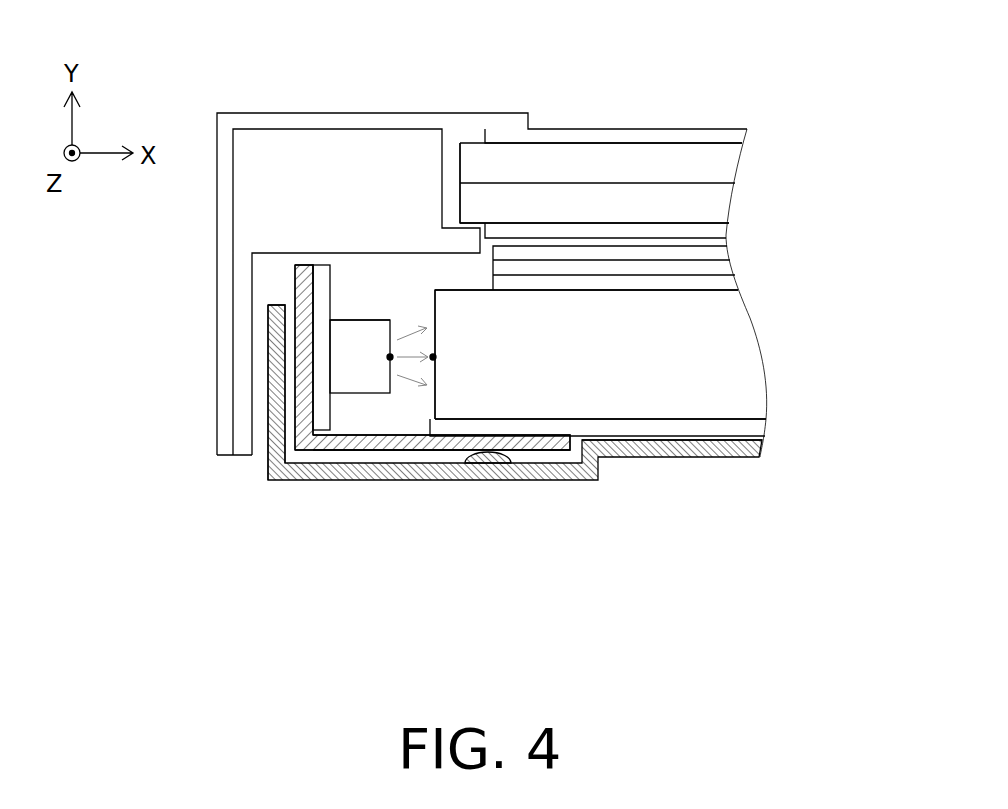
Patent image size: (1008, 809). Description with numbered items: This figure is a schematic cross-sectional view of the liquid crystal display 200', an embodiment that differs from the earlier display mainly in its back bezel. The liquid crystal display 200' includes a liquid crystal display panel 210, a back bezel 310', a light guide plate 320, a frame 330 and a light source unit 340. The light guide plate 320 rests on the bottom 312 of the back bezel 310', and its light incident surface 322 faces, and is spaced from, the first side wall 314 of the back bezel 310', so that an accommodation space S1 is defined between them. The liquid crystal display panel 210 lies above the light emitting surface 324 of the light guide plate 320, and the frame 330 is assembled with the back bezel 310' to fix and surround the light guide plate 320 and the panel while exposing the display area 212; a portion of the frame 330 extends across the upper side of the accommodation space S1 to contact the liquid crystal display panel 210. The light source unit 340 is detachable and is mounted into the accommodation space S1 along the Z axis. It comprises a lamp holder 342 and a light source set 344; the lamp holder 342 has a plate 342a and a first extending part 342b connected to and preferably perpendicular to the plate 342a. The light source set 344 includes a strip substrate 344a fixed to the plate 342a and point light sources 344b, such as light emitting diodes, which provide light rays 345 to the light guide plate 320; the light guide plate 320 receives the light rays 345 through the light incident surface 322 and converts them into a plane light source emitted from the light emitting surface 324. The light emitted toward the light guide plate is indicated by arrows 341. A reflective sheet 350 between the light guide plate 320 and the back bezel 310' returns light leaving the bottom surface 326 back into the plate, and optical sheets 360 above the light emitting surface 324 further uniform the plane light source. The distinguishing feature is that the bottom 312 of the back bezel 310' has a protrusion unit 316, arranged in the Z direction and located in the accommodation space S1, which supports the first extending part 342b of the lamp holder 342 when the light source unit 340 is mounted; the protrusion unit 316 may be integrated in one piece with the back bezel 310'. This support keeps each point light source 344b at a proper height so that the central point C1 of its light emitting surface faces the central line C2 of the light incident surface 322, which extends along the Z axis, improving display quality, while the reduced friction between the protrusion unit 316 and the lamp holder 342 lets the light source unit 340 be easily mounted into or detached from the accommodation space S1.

The liquid crystal display 200' is at (768, 547).
The liquid crystal display panel 210 is at (766, 188).
The display area 212 is at (643, 121).
The back bezel 310' is at (562, 395).
The bottom 312 is at (741, 435).
The first side wall 314 is at (296, 326).
The protrusion unit 316 is at (495, 458).
The light guide plate 320 is at (627, 407).
The light incident surface 322 is at (432, 294).
The light emitting surface 324 is at (733, 294).
The bottom surface 326 is at (717, 411).
The frame 330 is at (240, 320).
The light source unit 340 is at (343, 446).
The lamp holder 342 is at (343, 424).
The plate 342a is at (300, 393).
The first extending part 342b is at (330, 450).
The light source set 344 is at (334, 424).
The strip substrate 344a is at (326, 407).
The point light sources 344b is at (365, 431).
The light rays 345 is at (408, 446).
The light beam 341 is at (412, 381).
The reflective sheet 350 is at (697, 430).
The optical sheets 360 is at (720, 254).
The accommodation space S1 is at (358, 295).
The central point C1 is at (390, 357).
The central line C2 is at (434, 357).